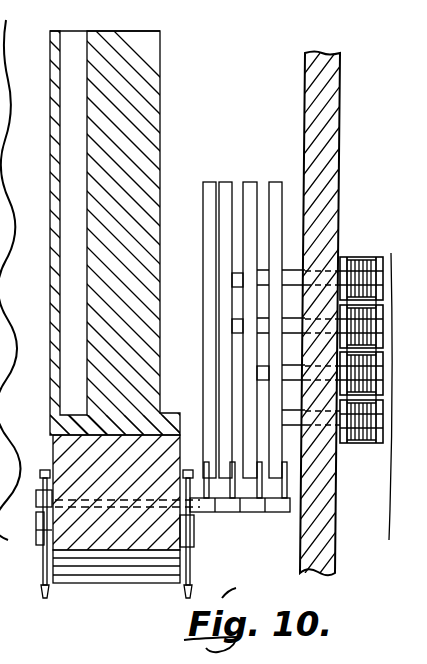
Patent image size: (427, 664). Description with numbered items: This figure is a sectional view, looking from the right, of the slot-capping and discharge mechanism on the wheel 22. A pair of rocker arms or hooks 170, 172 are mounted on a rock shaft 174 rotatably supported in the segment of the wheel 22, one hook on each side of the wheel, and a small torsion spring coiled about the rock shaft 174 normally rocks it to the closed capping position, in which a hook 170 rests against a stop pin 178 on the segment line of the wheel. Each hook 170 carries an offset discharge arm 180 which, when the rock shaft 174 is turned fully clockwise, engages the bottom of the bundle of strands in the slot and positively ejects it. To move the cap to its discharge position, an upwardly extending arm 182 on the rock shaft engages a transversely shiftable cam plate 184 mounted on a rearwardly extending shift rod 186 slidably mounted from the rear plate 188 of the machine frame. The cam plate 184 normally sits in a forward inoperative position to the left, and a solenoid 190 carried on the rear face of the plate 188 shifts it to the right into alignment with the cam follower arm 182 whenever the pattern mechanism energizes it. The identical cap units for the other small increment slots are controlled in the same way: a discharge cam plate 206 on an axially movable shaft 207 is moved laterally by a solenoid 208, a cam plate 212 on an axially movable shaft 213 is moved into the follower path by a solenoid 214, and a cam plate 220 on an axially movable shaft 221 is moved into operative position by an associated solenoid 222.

The wheel 22 is at (3, 73).
The rocker arm or hook 170 is at (55, 597).
The rocker arm or hook 172 is at (190, 588).
The rock shaft 174 is at (280, 513).
The stop pin 178 is at (43, 547).
The offset discharge arm 180 is at (36, 530).
The upwardly extending arm 182 is at (4, 446).
The cam plate 184 is at (275, 182).
The shift rod 186 is at (283, 423).
The rear plate 188 is at (323, 497).
The solenoid 190 is at (374, 406).
The discharge cam plate 206 is at (250, 182).
The axially movable shaft 207 is at (257, 372).
The solenoid 208 is at (388, 256).
The cam plate 212 is at (225, 182).
The axially movable shaft 213 is at (237, 328).
The solenoid 214 is at (362, 257).
The cam plate 220 is at (208, 182).
The axially movable shaft 221 is at (237, 278).
The solenoid 222 is at (350, 257).